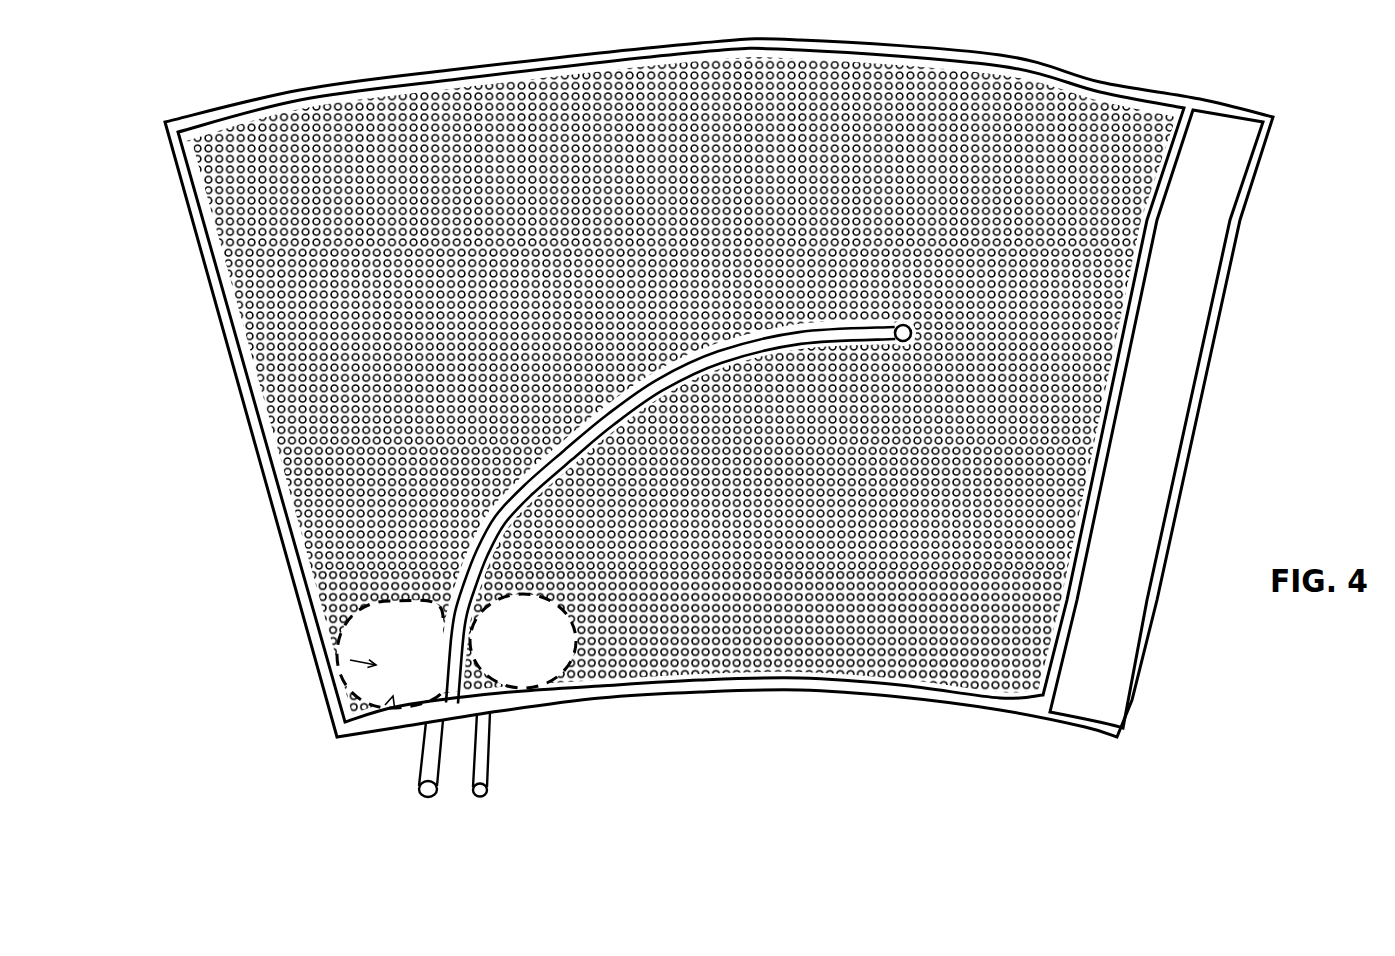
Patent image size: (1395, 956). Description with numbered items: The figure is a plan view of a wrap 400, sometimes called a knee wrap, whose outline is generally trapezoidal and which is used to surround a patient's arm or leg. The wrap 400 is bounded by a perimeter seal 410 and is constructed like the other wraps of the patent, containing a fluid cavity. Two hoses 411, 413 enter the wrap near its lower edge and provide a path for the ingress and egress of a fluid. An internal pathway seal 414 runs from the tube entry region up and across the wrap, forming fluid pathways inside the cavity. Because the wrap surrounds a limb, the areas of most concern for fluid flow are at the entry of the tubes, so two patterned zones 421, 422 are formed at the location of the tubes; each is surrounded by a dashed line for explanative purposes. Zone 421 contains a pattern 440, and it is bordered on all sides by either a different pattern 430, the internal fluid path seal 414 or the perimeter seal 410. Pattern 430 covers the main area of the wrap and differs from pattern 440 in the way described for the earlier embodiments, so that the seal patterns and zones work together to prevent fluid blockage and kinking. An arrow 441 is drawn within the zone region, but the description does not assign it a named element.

The wrap 400 is at (808, 735).
The perimeter seal 410 is at (1125, 731).
The pattern 430 is at (320, 259).
The internal pathway seal 414 is at (911, 333).
The pattern 440 is at (360, 699).
The zone 422 is at (549, 653).
The gas flow path 441 is at (404, 649).
The zone 421 is at (393, 696).
The hose 413 is at (433, 788).
The hose 411 is at (484, 789).